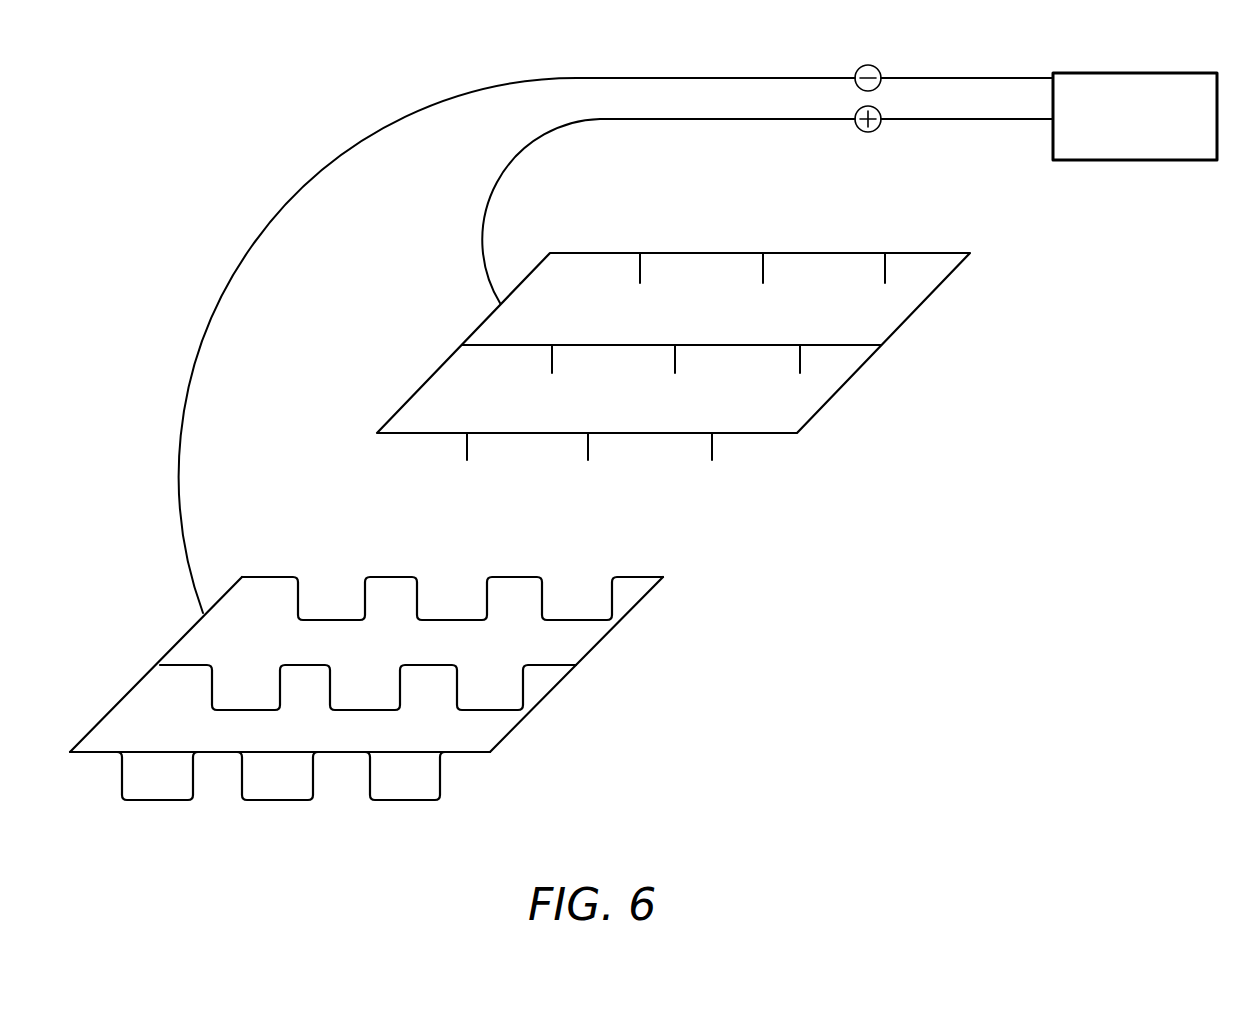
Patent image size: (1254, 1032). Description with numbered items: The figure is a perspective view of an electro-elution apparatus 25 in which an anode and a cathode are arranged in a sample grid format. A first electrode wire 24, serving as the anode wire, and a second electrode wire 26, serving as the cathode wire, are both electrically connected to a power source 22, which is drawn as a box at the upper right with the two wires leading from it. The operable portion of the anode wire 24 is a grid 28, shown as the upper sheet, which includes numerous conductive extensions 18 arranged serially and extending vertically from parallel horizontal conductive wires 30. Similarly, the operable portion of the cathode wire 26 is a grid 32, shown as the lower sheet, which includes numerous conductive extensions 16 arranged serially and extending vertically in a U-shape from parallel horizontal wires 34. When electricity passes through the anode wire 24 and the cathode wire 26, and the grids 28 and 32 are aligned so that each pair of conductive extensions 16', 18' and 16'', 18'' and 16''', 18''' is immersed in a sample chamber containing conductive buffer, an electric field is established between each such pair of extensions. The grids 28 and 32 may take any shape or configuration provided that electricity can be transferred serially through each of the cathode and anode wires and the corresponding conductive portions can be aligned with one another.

The conductive extensions 16 is at (360, 636).
The conductive extension 16' is at (427, 770).
The conductive extension 16'' is at (301, 770).
The conductive extension 16''' is at (153, 770).
The conductive extensions 18 is at (718, 321).
The conductive extension 18' is at (751, 467).
The conductive extension 18'' is at (625, 467).
The conductive extension 18''' is at (502, 467).
The power source 22 is at (1100, 92).
The first electrode wire 24 is at (935, 119).
The electro-elution apparatus 25 is at (358, 112).
The second electrode wire 26 is at (930, 78).
The grid 28 is at (892, 371).
The parallel horizontal conductive wires 30 is at (905, 253).
The grid 32 is at (575, 696).
The parallel horizontal wires 34 is at (640, 576).